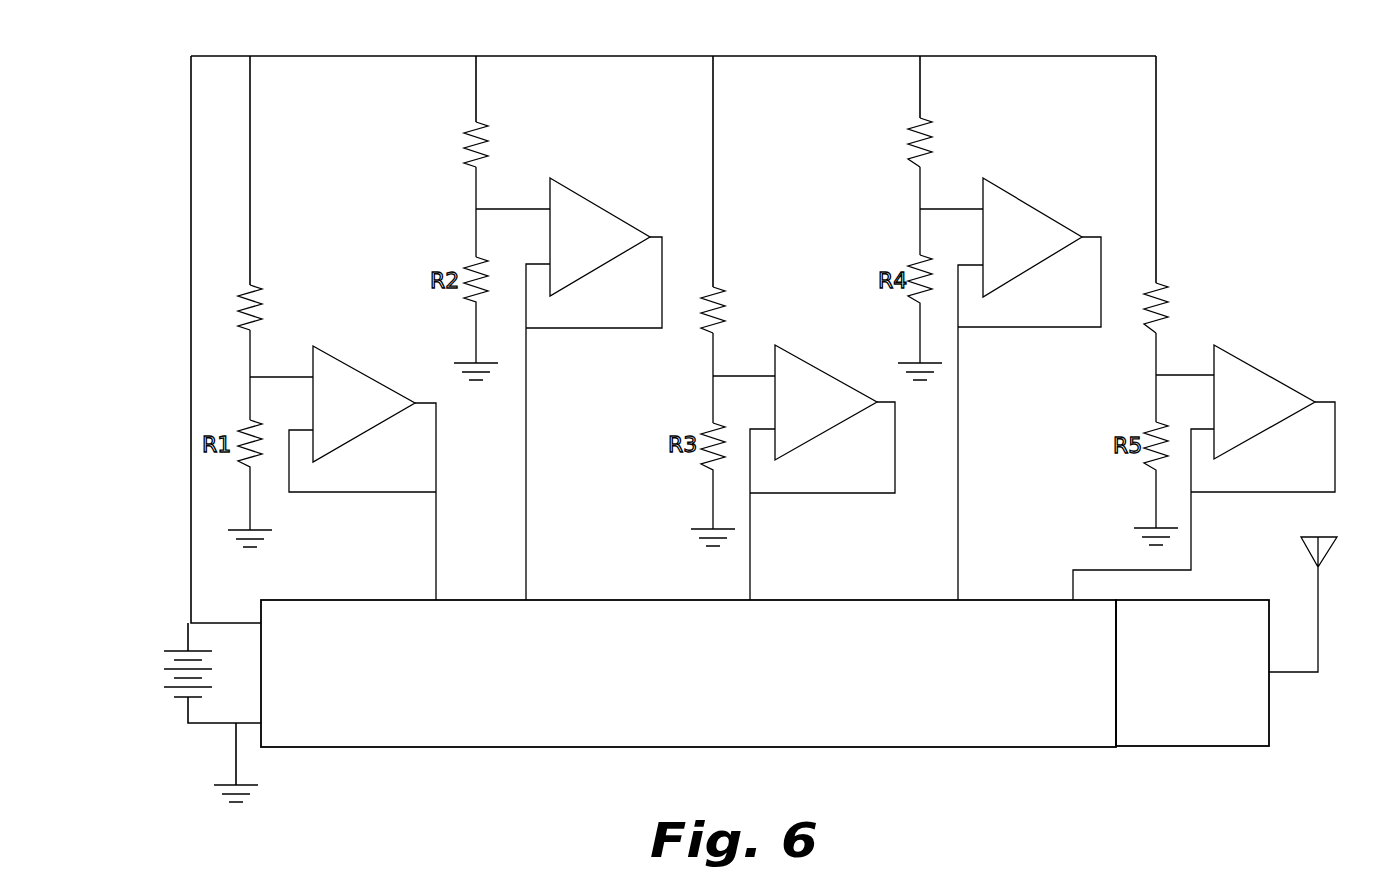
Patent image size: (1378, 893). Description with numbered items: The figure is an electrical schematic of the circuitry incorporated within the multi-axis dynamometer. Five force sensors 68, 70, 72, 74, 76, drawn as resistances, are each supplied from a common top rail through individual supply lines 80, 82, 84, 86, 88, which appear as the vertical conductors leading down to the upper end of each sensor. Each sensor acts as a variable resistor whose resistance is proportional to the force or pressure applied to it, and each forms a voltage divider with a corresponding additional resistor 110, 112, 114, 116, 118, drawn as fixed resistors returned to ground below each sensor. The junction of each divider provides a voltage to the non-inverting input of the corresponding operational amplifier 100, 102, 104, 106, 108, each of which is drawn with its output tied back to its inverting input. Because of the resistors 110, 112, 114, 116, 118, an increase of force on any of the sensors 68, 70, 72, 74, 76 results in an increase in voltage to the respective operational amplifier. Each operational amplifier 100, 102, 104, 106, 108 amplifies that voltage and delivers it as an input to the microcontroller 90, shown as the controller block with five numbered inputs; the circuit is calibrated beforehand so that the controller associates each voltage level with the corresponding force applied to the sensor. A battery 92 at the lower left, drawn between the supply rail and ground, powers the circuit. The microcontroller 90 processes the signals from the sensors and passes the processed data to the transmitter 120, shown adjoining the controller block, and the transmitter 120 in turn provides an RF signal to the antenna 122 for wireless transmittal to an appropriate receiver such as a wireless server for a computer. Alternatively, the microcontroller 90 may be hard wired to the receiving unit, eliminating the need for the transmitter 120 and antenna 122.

The force sensor 68 is at (250, 287).
The force sensor 70 is at (484, 122).
The force sensor 72 is at (722, 290).
The force sensor 74 is at (934, 140).
The force sensor 76 is at (1165, 290).
The supply line to S1 80 is at (250, 158).
The supply line to S2 82 is at (476, 90).
The supply line to S3 84 is at (713, 140).
The supply line to S4 86 is at (920, 80).
The supply line to S5 88 is at (1157, 120).
The microcontroller 90 is at (440, 748).
The battery 92 is at (182, 700).
The operational amplifier 100 is at (354, 369).
The operational amplifier 102 is at (600, 201).
The operational amplifier 104 is at (826, 369).
The operational amplifier 106 is at (1042, 215).
The operational amplifier 108 is at (1268, 373).
The resistor 110 is at (246, 427).
The resistor 112 is at (470, 262).
The resistor 114 is at (708, 427).
The resistor 116 is at (914, 260).
The resistor 118 is at (1150, 424).
The transmitter 120 is at (1203, 748).
The antenna 122 is at (1308, 556).